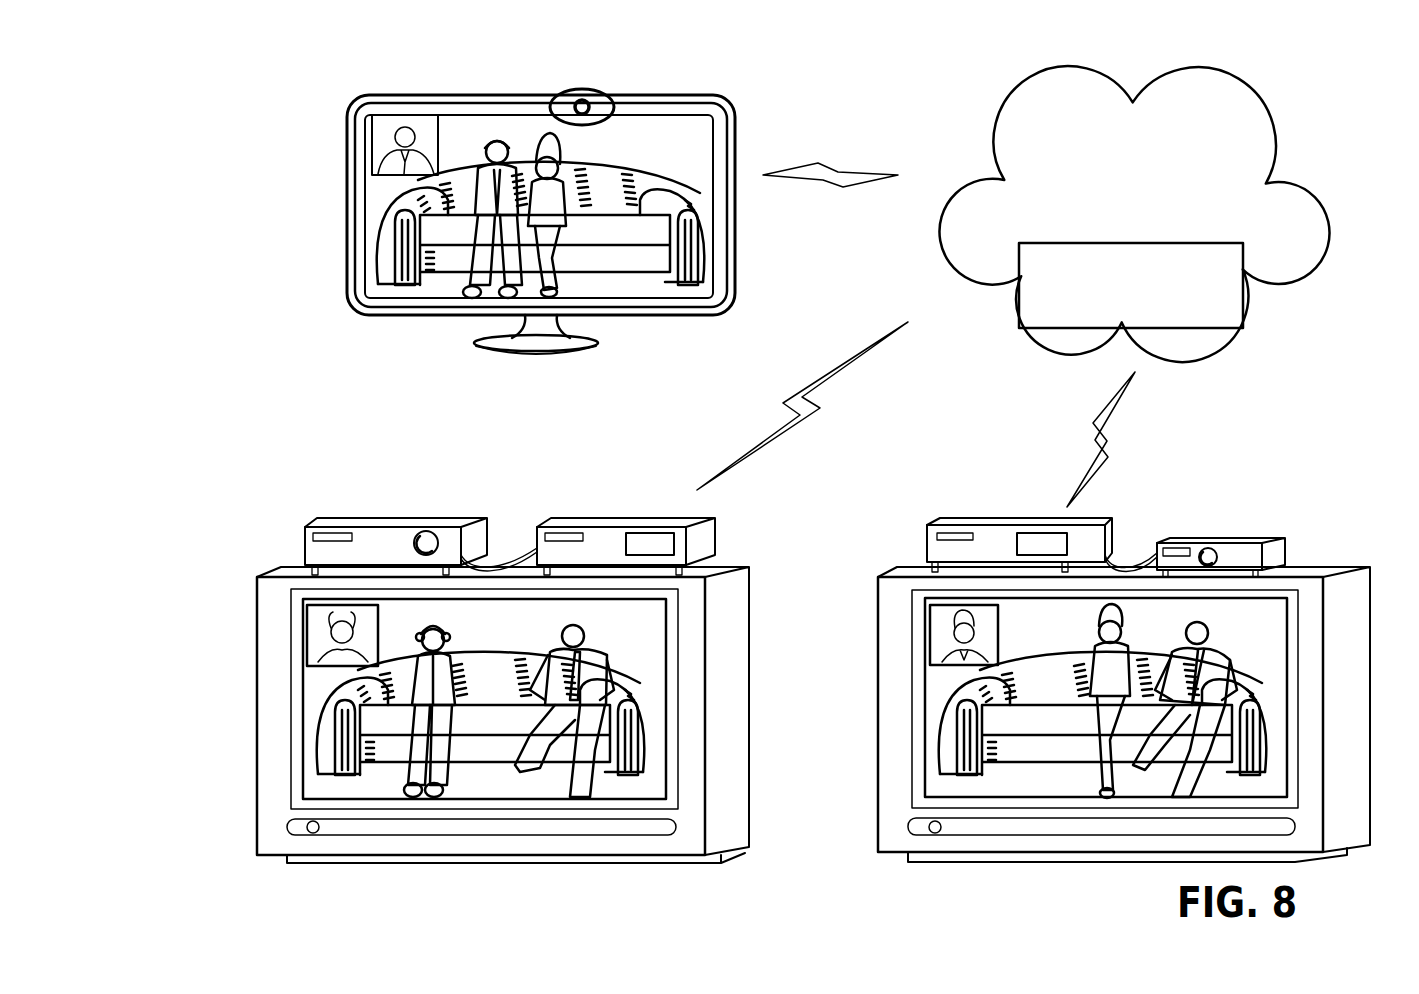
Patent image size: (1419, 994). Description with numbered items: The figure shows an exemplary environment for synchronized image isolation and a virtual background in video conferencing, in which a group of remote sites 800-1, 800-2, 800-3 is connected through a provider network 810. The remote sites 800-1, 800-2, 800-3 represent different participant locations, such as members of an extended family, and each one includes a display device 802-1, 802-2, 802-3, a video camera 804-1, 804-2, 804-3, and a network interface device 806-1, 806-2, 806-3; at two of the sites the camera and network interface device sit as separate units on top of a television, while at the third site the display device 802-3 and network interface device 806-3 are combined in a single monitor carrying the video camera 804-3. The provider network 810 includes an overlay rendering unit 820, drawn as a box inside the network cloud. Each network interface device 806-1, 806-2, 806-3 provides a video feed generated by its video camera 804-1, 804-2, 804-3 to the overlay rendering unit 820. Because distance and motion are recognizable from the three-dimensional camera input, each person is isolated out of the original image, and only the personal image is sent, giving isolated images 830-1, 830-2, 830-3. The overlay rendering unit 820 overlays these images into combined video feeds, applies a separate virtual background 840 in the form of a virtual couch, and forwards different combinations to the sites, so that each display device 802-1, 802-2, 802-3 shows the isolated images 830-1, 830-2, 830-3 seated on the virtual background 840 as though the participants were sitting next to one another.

The remote site 800-1 is at (1255, 498).
The remote site 800-2 is at (283, 540).
The remote site 800-3 is at (309, 90).
The display device 802-1 is at (878, 700).
The display device 802-2 is at (259, 700).
The display device 802-3 is at (347, 200).
The video camera 804-1 is at (1210, 538).
The video camera 804-2 is at (330, 523).
The video camera 804-3 is at (561, 91).
The network interface device 806-1 is at (952, 520).
The network interface device 806-2 is at (559, 523).
The network interface device 806-3 is at (337, 163).
The provider network 810 is at (1152, 223).
The overlay rendering unit 820 is at (1152, 322).
The isolated image 830-1 is at (465, 303).
The isolated image 830-2 is at (562, 291).
The isolated image 830-3 is at (530, 795).
The virtual background 840 is at (373, 232).